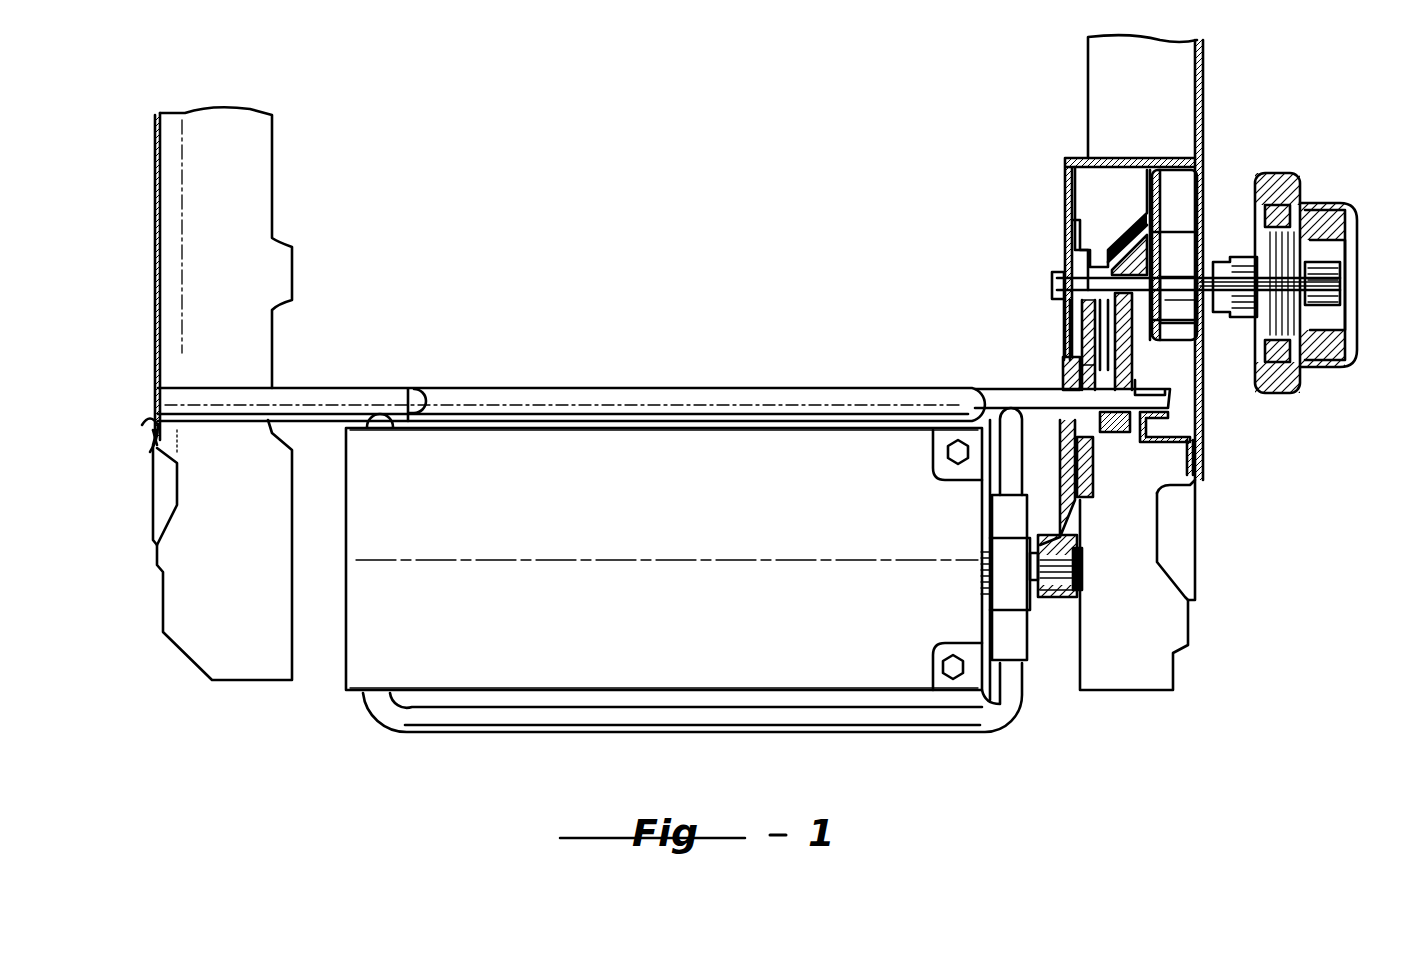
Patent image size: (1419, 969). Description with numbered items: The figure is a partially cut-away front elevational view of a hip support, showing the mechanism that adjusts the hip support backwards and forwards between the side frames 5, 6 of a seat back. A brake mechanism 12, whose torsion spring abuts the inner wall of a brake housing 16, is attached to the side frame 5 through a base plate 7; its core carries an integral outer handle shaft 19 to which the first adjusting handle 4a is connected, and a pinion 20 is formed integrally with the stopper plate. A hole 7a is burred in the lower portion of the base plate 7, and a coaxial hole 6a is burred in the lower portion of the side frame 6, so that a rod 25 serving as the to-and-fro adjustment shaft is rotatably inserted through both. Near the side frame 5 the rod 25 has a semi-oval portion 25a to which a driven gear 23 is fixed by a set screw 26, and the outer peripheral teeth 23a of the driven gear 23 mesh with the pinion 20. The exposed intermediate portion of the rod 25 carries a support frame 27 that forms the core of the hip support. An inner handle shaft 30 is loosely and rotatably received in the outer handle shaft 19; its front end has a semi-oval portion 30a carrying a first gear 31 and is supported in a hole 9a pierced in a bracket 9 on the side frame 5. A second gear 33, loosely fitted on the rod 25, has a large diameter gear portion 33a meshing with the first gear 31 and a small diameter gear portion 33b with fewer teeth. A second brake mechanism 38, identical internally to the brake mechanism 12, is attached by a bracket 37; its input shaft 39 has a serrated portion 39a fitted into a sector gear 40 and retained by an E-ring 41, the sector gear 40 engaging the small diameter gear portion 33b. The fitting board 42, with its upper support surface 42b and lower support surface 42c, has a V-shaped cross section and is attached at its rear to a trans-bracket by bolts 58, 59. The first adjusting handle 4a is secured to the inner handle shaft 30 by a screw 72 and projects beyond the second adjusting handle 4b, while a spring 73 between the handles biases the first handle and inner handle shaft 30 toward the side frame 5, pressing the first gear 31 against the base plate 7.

The first adjusting handle 4a is at (1305, 180).
The second adjusting handle 4b is at (1352, 220).
The side frame 5 is at (1203, 44).
The side frame 6 is at (272, 158).
The hole 6a is at (152, 415).
The base plate 7 is at (1200, 136).
The hole 7a is at (1195, 452).
The bracket 9 is at (1080, 158).
The hole 9a is at (1062, 283).
The brake mechanism 12 is at (1175, 213).
The brake housing 16 is at (1195, 328).
The outer handle shaft 19 is at (1215, 270).
The pinion 20 is at (1128, 250).
The driven gear 23 is at (1180, 425).
The outer peripheral teeth 23a is at (1160, 355).
The rod 25 is at (607, 400).
The semi-oval portion 25a is at (1125, 420).
The set screw 26 is at (1106, 432).
The support frame 27 is at (958, 732).
The inner handle shaft 30 is at (1320, 310).
The semi-oval portion 30a is at (1054, 286).
The first gear 31 is at (1068, 218).
The second gear 33 is at (985, 312).
The large diameter gear portion 33a is at (1085, 335).
The small diameter gear portion 33b is at (1082, 372).
The bracket 37 is at (1005, 698).
The brake mechanism 38 is at (1000, 597).
The input shaft 39 is at (1033, 600).
The serrated portion 39a is at (1078, 598).
The sector gear 40 is at (1052, 592).
The E-ring 41 is at (1078, 575).
The fitting board 42 is at (565, 667).
The upper support surface 42b is at (470, 455).
The lower support surface 42c is at (452, 665).
The bolt 58 is at (950, 445).
The bolt 59 is at (945, 680).
The screw 72 is at (1342, 283).
The spring 73 is at (1325, 360).